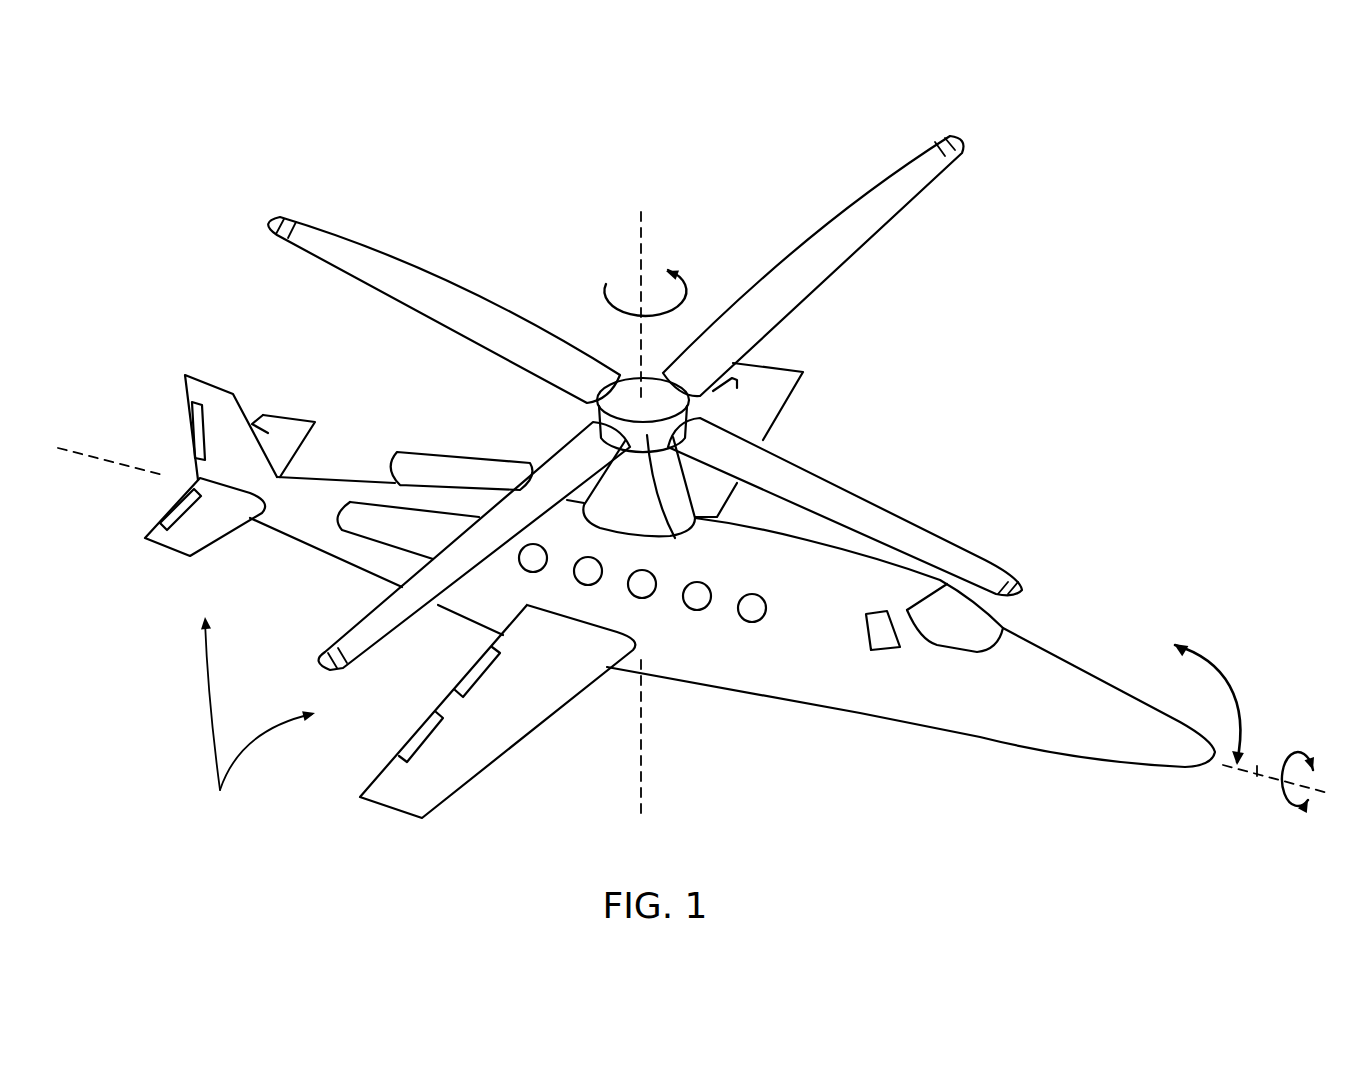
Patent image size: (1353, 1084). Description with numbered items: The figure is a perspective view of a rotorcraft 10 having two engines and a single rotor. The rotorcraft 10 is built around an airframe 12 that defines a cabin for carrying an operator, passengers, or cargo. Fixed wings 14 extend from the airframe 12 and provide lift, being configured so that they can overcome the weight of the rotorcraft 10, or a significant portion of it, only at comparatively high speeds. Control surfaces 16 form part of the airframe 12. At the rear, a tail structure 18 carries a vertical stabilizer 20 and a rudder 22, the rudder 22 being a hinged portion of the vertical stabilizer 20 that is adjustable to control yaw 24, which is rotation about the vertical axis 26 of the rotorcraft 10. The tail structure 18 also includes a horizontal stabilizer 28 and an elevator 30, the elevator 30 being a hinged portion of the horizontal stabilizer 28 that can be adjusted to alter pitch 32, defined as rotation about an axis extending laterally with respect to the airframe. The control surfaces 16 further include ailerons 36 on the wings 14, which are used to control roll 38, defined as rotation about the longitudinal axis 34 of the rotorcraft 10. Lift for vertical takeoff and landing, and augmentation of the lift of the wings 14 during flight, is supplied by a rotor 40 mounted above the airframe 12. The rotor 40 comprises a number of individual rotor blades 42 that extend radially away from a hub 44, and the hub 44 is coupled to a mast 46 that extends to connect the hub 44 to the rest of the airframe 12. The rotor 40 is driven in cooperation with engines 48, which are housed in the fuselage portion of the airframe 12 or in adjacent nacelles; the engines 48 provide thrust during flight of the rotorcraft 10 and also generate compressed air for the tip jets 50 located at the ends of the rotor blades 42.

The rotorcraft 10 is at (1027, 386).
The airframe 12 is at (805, 688).
The fixed wings 14 is at (765, 410).
The control surfaces 16 is at (258, 719).
The tail structure 18 is at (145, 559).
The vertical stabilizer 20 is at (213, 397).
The rudder 22 is at (192, 433).
The yaw 24 is at (606, 284).
The vertical axis 26 is at (641, 228).
The horizontal stabilizer 28 is at (203, 527).
The elevator 30 is at (178, 523).
The pitch 32 is at (1228, 686).
The longitudinal axis 34 is at (1257, 768).
The ailerons 36 is at (733, 387).
The roll 38 is at (1290, 812).
The rotor 40 is at (657, 365).
The rotor blades 42 is at (414, 272).
The hub 44 is at (670, 537).
The mast 46 is at (635, 497).
The engines 48 is at (445, 462).
The tip jets 50 is at (292, 218).